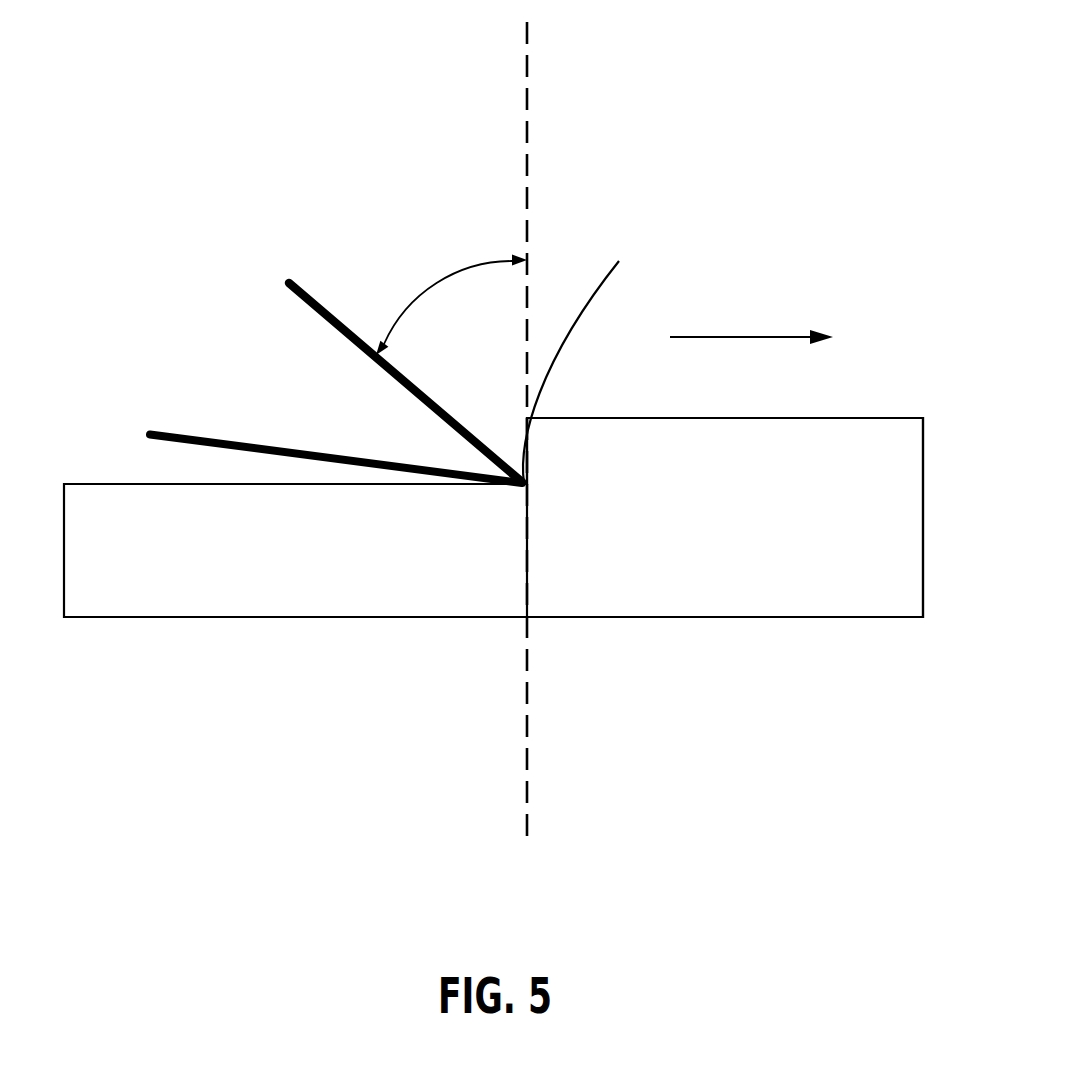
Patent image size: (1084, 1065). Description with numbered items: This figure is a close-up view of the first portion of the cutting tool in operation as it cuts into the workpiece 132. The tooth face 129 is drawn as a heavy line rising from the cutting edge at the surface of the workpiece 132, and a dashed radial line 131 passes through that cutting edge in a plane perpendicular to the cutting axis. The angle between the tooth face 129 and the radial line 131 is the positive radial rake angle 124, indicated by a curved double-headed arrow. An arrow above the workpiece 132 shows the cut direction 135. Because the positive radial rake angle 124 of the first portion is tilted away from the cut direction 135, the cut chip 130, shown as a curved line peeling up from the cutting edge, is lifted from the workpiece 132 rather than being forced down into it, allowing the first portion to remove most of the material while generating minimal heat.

The positive radial rake angle 124 is at (467, 272).
The tooth face 129 is at (322, 305).
The cut chip 130 is at (600, 280).
The radial line 131 is at (527, 98).
The workpiece 132 is at (857, 417).
The cut direction 135 is at (760, 337).